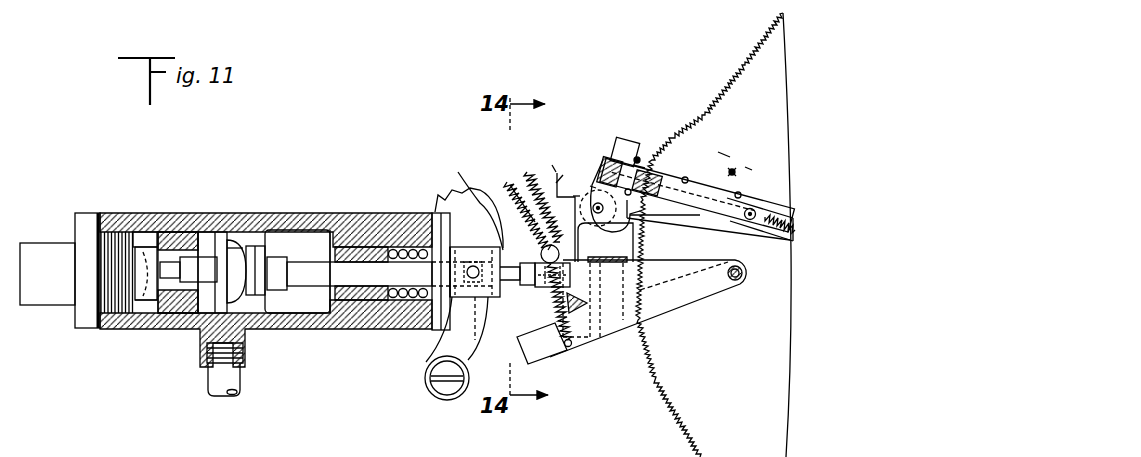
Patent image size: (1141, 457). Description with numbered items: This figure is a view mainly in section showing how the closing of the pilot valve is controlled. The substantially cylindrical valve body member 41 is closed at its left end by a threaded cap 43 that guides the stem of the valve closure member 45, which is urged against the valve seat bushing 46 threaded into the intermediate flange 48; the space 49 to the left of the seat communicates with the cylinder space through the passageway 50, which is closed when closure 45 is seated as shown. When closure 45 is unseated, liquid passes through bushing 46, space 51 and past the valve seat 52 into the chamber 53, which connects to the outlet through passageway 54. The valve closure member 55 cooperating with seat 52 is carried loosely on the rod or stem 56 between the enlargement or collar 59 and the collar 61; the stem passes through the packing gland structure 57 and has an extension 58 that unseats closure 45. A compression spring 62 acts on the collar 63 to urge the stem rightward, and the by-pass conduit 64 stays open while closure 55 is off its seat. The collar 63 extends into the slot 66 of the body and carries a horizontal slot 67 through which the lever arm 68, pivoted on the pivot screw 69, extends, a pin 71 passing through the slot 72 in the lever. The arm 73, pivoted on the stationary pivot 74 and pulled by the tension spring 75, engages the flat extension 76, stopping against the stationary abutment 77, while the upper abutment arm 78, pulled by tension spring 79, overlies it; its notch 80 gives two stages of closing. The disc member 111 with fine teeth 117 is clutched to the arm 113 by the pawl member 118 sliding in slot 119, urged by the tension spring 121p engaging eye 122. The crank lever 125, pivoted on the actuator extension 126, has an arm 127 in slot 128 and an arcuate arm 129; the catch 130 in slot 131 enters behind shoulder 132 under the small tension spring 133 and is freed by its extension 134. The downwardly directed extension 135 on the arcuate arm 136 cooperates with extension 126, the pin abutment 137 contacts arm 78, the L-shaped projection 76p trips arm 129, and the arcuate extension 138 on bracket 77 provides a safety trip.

The valve body member 41 is at (386, 330).
The cap 43 is at (80, 331).
The valve closure member 45 is at (147, 248).
The valve seat bushing 46 is at (176, 314).
The intermediate flange 48 is at (178, 235).
The space 49 is at (150, 301).
The passageway 50 is at (140, 306).
The space 51 is at (230, 243).
The valve seat 52 is at (260, 262).
The chamber 53 is at (314, 238).
The passageway 54 is at (300, 288).
The valve closure member 55 is at (240, 242).
The rod or stem 56 is at (283, 274).
The packing gland structure 57 is at (355, 247).
The extension 58 is at (160, 245).
The enlargement or collar 59 is at (286, 240).
The collar 61 is at (215, 238).
The compression spring 62 is at (413, 300).
The collar 63 is at (440, 214).
The by-pass conduit 64 is at (239, 393).
The slot 66 is at (462, 192).
The horizontal slot 67 is at (445, 321).
The lever arm 68 is at (478, 325).
The pivot screw 69 is at (432, 393).
The pin 71 is at (473, 255).
The slot 72 is at (512, 283).
The arm 73 is at (553, 350).
The stationary pivot 74 is at (736, 284).
The tension spring 75 is at (500, 212).
The flat extension 76 is at (548, 308).
The L-shaped projection 76p is at (560, 326).
The stationary abutment 77 is at (641, 245).
The upper abutment arm 78 is at (697, 286).
The tension spring 79 is at (530, 185).
The notch 80 is at (545, 250).
The disc member 111 is at (765, 405).
The arm 113 is at (772, 200).
The fine teeth 117 is at (728, 52).
The pawl member 118 is at (659, 160).
The slot 119 is at (707, 206).
The tension spring 121p is at (748, 274).
The eye 122 is at (748, 221).
The crank lever 125 is at (573, 195).
The actuator extension 126 is at (590, 185).
The arm of lever 127 is at (636, 157).
The slot 128 is at (636, 165).
The arcuate arm 129 is at (578, 239).
The catch 130 is at (718, 152).
The slot 131 is at (716, 156).
The shoulder 132 is at (757, 178).
The small tension spring 133 is at (745, 167).
The extension of catch 134 is at (622, 149).
The downwardly directed extension 135 is at (556, 170).
The arcuate arm 136 is at (572, 185).
The pin abutment 137 is at (533, 183).
The arcuate extension 138 is at (607, 330).